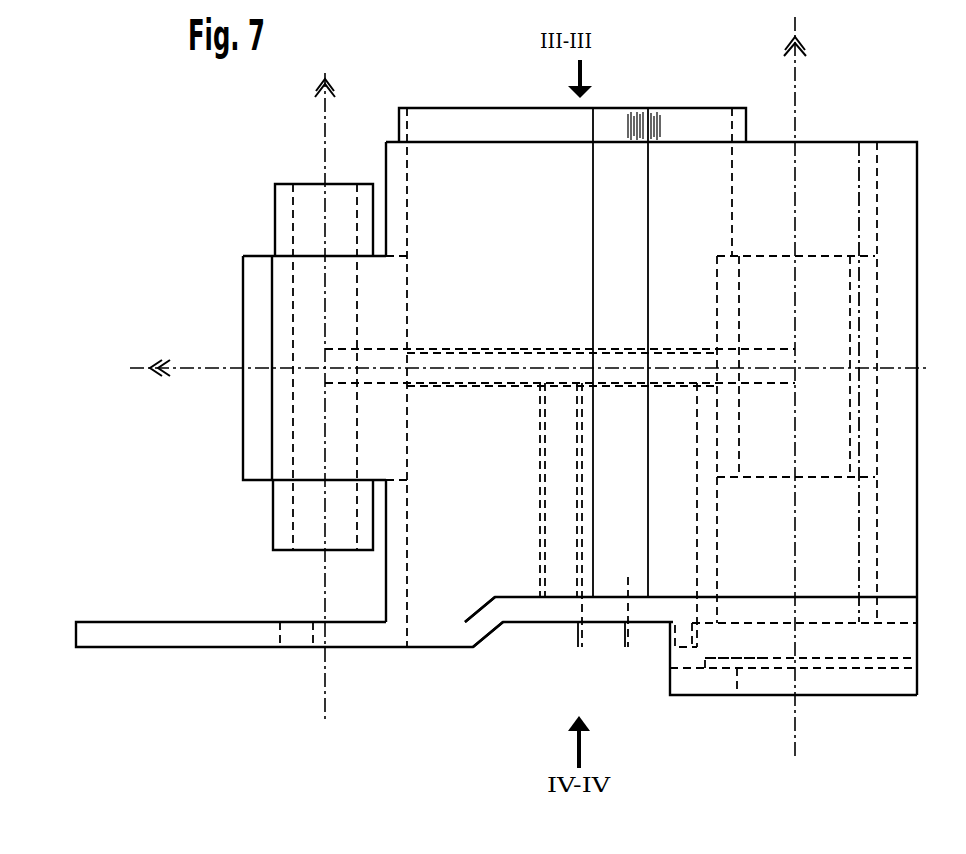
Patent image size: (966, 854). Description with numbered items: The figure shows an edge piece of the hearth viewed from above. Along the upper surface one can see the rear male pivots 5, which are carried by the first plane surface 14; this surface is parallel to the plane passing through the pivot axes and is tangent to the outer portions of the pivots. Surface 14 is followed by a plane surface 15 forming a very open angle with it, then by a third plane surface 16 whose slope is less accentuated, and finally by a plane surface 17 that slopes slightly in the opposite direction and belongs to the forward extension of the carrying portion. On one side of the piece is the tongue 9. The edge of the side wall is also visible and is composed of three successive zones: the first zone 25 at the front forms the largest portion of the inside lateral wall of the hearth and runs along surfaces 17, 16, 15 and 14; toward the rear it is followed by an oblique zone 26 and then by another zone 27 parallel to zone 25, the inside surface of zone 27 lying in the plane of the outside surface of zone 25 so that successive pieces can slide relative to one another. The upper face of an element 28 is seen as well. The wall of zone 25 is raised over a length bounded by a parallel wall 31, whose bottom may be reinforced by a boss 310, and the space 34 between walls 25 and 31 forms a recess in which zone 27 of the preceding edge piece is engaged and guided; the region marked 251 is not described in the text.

The rear male pivots 5 is at (368, 197).
The tongue 9 is at (532, 123).
The first plane surface 14 is at (458, 182).
The second plane surface 15 is at (628, 182).
The third plane surface 16 is at (697, 182).
The fourth plane surface 17 is at (828, 178).
The first zone of side wall 25 is at (750, 607).
The recess portion 251 is at (830, 607).
The oblique zone 26 is at (488, 610).
The rear zone of side wall 27 is at (340, 640).
The element 28 is at (853, 687).
The parallel wall 31 is at (816, 687).
The space 34 is at (765, 645).
The boss 310 is at (908, 660).